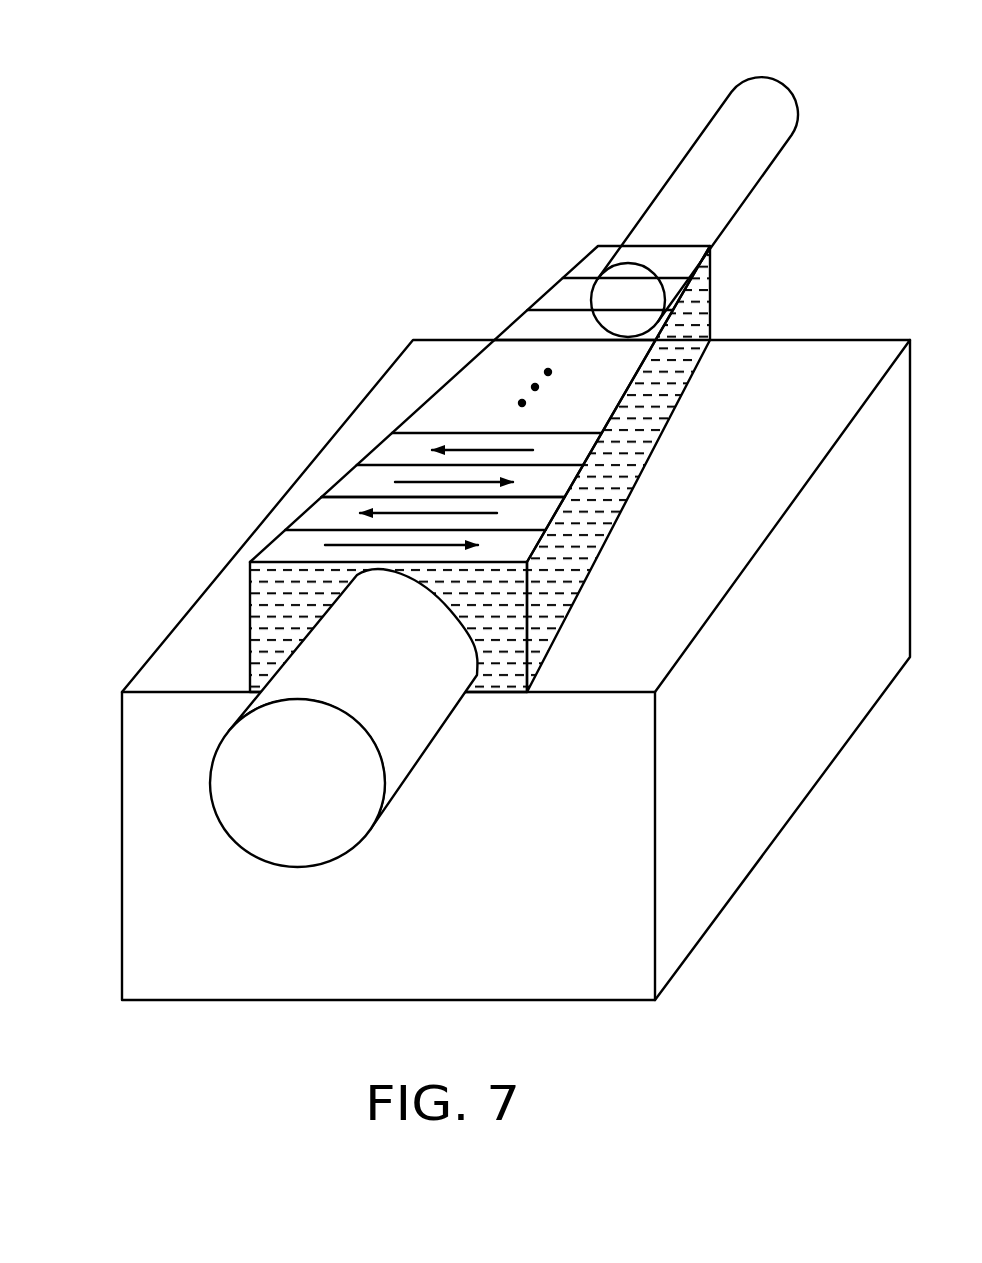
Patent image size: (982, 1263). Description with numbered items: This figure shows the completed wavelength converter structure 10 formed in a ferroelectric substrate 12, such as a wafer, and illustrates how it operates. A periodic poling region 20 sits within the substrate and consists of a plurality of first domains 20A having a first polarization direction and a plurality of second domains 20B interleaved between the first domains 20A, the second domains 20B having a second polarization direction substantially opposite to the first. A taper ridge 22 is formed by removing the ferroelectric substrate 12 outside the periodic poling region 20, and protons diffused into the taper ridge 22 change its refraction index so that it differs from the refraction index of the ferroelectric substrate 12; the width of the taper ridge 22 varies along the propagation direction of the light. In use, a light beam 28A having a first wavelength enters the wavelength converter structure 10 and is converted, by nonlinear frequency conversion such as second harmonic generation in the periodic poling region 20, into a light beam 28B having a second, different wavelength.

The wavelength converter structure 10 is at (477, 529).
The ferroelectric substrate 12 is at (540, 909).
The periodic poling region 20 is at (446, 429).
The first domains 20A is at (318, 517).
The second domains 20B is at (352, 485).
The taper ridge 22 is at (567, 288).
The light beam having a first wavelength 28A is at (283, 686).
The light beam having a second wavelength 28B is at (760, 182).